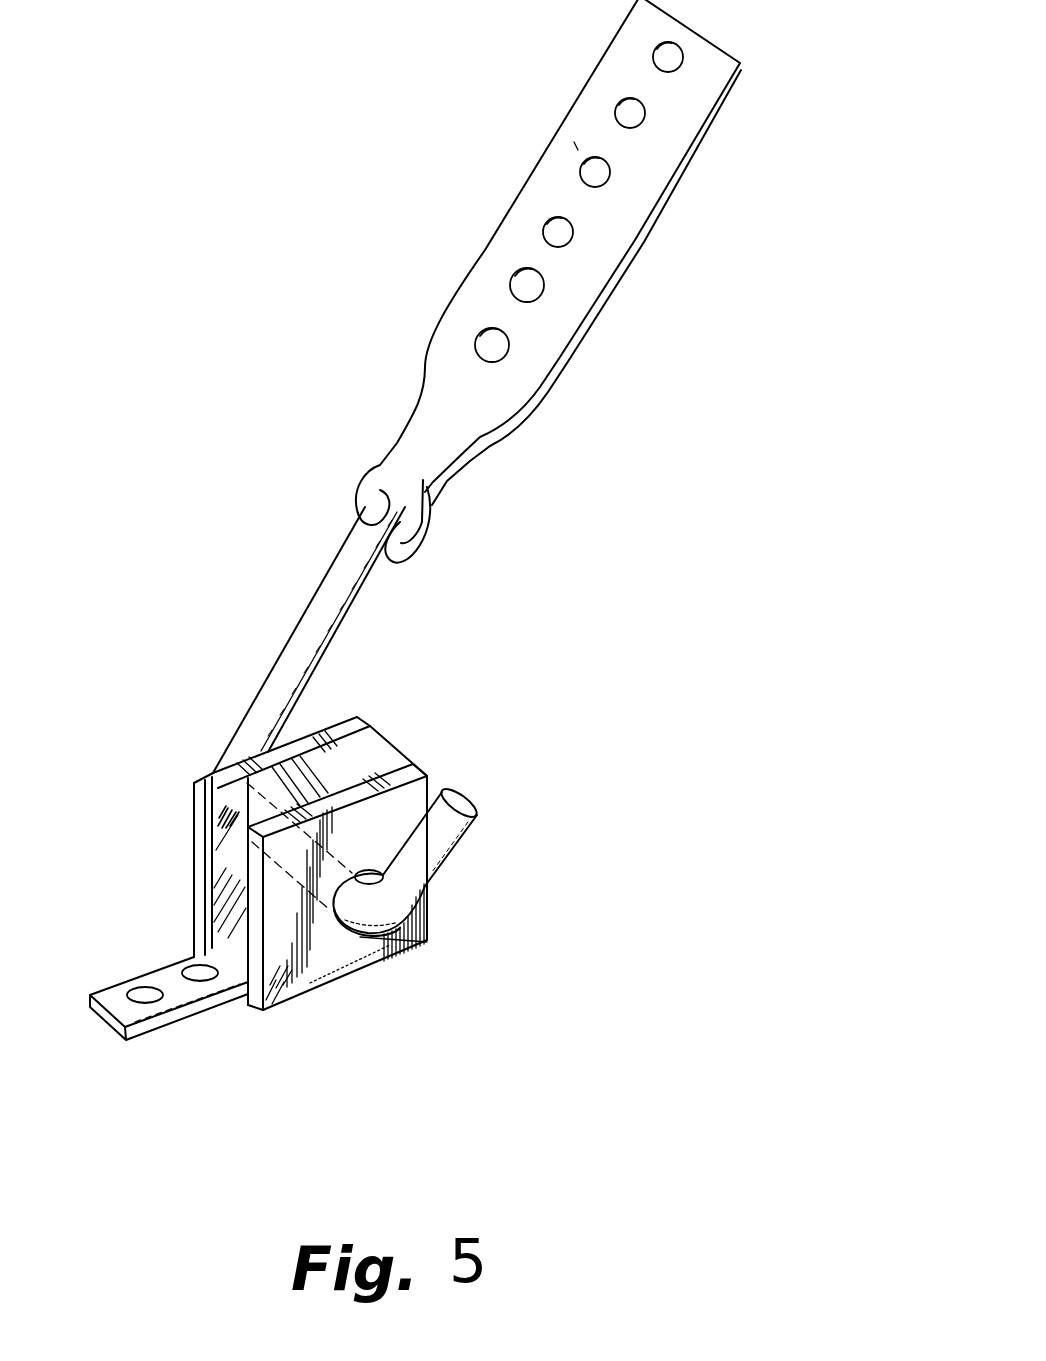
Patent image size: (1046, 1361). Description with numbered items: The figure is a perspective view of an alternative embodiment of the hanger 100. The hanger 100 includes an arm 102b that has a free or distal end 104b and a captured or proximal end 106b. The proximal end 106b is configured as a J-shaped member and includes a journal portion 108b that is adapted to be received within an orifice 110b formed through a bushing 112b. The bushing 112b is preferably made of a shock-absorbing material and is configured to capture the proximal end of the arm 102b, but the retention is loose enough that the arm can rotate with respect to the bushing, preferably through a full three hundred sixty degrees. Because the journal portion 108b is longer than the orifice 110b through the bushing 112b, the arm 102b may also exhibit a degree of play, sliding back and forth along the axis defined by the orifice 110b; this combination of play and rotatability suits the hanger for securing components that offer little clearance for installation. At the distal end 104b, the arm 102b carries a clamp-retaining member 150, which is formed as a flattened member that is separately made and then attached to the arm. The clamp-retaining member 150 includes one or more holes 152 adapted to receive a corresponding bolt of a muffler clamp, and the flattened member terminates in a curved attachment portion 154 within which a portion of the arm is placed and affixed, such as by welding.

The hanger 100 is at (317, 330).
The arm 102b is at (457, 268).
The distal end 104b is at (727, 147).
The proximal end 106b is at (515, 760).
The journal portion 108b is at (212, 825).
The orifice 110b is at (360, 935).
The bushing 112b is at (308, 975).
The clamp-retaining member 150 is at (575, 142).
The holes 152 is at (656, 50).
The curved attachment portion 154 is at (360, 507).